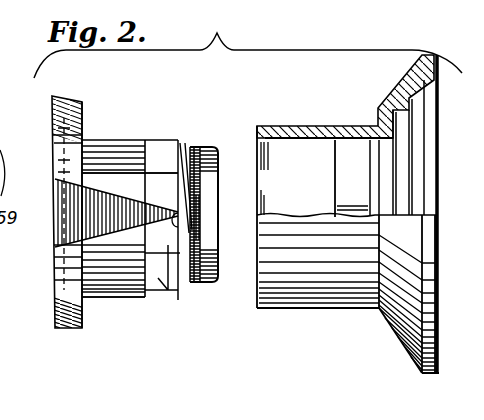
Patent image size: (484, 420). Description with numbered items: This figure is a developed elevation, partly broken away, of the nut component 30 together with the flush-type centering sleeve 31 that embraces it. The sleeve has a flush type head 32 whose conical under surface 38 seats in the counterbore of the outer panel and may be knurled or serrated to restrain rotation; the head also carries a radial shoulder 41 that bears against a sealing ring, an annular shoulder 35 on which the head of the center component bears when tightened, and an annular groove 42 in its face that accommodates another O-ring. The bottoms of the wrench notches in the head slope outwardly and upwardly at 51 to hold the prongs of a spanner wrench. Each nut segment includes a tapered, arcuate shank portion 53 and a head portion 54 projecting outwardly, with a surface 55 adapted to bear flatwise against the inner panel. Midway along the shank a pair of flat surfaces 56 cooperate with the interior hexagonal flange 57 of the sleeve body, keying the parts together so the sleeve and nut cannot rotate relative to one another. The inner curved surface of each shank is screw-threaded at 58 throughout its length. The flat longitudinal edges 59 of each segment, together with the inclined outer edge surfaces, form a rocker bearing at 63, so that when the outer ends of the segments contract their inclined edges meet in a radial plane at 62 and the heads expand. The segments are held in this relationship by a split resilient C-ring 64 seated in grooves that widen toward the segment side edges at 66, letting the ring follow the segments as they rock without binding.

The triple segment nut component 30 is at (137, 297).
The centering sleeve 31 is at (334, 310).
The flush type head 32 is at (441, 318).
The annular shoulder 35 is at (415, 105).
The conical under surface 38 is at (408, 98).
The radial shoulder 41 is at (380, 124).
The annular groove 42 is at (394, 110).
The sloping recess bottom 51 is at (436, 89).
The shank portion 53 is at (132, 150).
The head portion 54 is at (65, 115).
The bearing surface 55 is at (82, 125).
The flat surfaces 56 is at (160, 277).
The interior hexagonal flange 57 is at (337, 147).
The screw threads 58 is at (82, 211).
The longitudinal edges 59 is at (122, 197).
The radial meeting plane 62 is at (213, 202).
The rocker bearing 63 is at (200, 237).
The split resilient C-ring 64 is at (195, 148).
The widened groove portion 66 is at (183, 203).